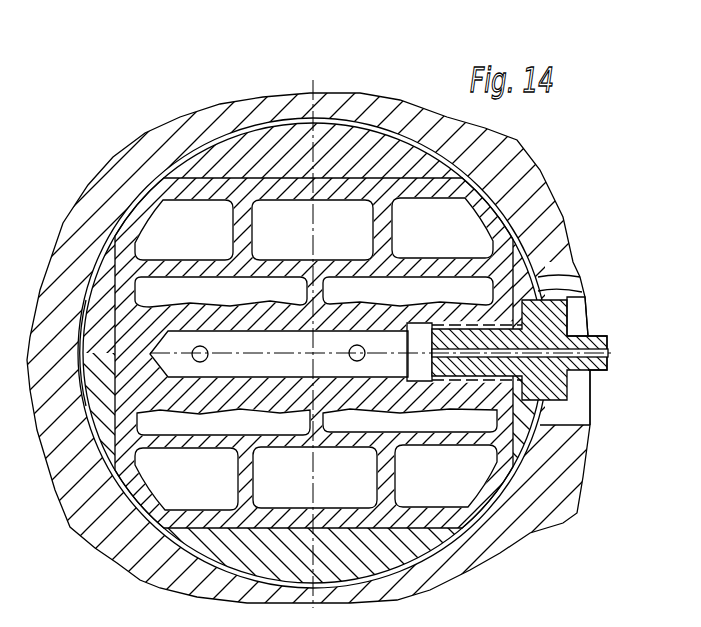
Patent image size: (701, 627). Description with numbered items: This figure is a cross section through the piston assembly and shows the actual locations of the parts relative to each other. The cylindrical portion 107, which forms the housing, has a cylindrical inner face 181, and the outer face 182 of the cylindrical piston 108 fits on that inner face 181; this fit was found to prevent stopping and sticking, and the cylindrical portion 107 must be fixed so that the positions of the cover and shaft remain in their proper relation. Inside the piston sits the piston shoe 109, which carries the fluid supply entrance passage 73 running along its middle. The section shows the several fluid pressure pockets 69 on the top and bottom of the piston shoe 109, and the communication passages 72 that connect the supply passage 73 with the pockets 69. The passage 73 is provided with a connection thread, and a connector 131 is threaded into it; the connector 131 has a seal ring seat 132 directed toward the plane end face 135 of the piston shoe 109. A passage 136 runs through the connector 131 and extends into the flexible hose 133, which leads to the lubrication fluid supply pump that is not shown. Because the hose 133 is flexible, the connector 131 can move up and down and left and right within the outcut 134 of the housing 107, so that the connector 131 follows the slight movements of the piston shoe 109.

The fluid pressure pockets 69 is at (173, 240).
The communication passages 72 is at (208, 350).
The fluid supply entrance passage 73 is at (289, 350).
The cylindrical portion 107 is at (85, 193).
The cylindrical piston 108 is at (233, 157).
The piston shoe 109 is at (322, 190).
The connector 131 is at (560, 317).
The seal ring seat 132 is at (580, 293).
The flexible hose 133 is at (609, 338).
The outcut 134 is at (583, 415).
The plane end face 135 is at (578, 277).
The passage 136 is at (609, 355).
The cylindrical inner face 181 is at (94, 418).
The outer face 182 is at (180, 157).